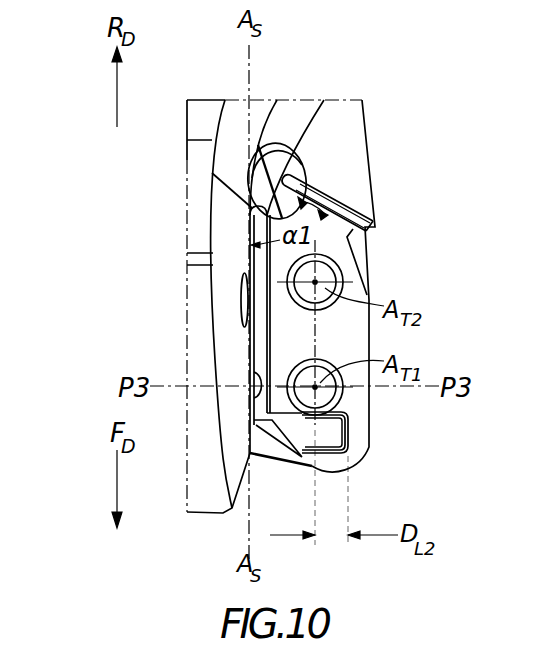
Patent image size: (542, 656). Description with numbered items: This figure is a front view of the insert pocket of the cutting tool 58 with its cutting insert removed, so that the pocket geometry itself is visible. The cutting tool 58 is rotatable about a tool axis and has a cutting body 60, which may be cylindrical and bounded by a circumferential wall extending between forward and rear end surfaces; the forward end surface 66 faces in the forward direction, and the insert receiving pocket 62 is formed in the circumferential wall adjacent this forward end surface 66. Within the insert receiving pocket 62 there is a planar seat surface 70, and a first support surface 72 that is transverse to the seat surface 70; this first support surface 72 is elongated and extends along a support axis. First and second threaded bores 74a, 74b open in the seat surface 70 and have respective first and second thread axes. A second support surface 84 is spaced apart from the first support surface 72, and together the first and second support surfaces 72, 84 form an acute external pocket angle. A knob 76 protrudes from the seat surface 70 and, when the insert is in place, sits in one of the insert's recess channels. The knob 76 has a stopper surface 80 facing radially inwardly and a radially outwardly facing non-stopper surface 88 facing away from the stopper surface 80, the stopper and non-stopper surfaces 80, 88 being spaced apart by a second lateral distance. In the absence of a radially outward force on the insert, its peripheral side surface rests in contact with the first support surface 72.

The cutting tool 58 is at (158, 196).
The cutting body 60 is at (200, 288).
The insert receiving pocket 62 is at (300, 187).
The forward end surface 66 is at (205, 520).
The seat surface 70 is at (345, 340).
The first support surface 72 is at (257, 392).
The first threaded bore 74a is at (345, 396).
The second threaded bore 74b is at (330, 270).
The knob 76 is at (310, 427).
The stopper surface 80 is at (302, 445).
The second support surface 84 is at (374, 221).
The non-stopper surface 88 is at (355, 445).